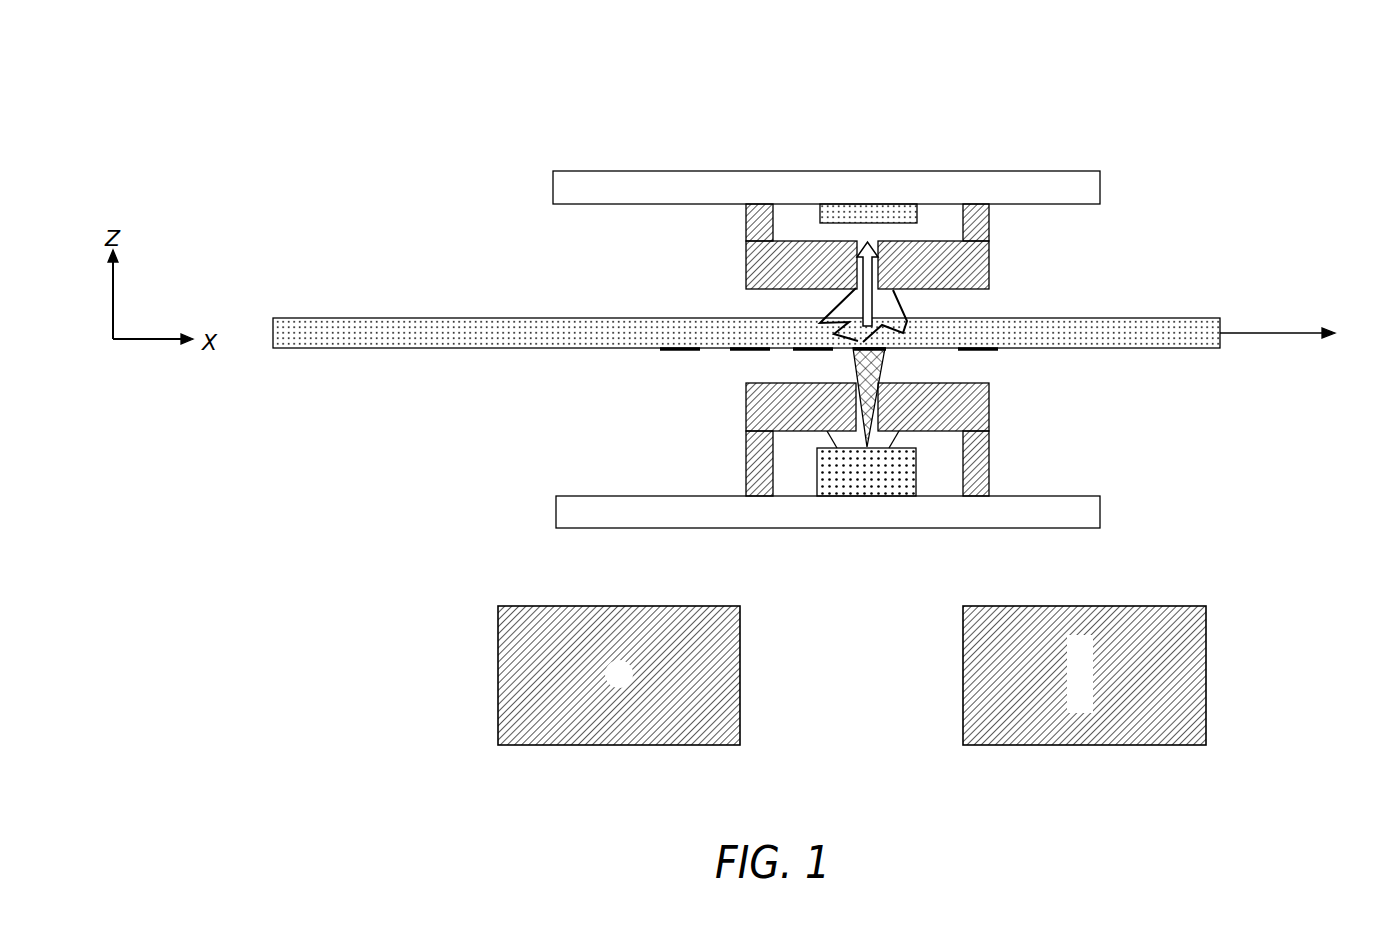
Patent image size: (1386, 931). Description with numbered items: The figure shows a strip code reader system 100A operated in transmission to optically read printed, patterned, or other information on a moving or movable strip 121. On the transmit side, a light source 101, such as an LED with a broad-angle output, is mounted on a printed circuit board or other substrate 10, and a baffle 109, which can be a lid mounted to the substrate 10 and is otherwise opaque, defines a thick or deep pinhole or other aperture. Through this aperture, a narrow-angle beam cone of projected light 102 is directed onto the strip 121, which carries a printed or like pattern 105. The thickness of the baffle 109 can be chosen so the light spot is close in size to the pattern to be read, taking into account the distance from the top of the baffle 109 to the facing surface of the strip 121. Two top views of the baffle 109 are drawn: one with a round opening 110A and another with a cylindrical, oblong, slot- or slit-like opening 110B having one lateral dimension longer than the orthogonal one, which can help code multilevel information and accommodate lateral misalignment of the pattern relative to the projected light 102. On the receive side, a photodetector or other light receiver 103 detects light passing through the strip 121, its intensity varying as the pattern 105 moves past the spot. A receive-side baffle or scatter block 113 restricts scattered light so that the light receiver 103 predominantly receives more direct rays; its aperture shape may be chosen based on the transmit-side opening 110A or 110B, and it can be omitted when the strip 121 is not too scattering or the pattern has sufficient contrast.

The strip code reader system 100A is at (1262, 80).
The light receiver 103 is at (868, 204).
The scatter block 113 is at (745, 263).
The projected light 102 is at (900, 306).
The strip 121 is at (1180, 318).
The pattern 105 is at (680, 350).
The baffle 109 is at (746, 407).
The substrate 10 is at (588, 505).
The light source 101 is at (916, 473).
The round opening 110A is at (606, 598).
The slit-like opening 110B is at (1088, 598).